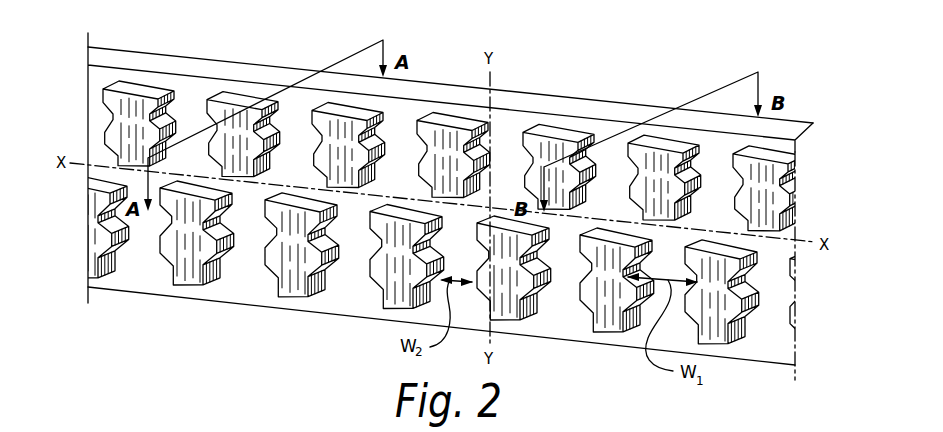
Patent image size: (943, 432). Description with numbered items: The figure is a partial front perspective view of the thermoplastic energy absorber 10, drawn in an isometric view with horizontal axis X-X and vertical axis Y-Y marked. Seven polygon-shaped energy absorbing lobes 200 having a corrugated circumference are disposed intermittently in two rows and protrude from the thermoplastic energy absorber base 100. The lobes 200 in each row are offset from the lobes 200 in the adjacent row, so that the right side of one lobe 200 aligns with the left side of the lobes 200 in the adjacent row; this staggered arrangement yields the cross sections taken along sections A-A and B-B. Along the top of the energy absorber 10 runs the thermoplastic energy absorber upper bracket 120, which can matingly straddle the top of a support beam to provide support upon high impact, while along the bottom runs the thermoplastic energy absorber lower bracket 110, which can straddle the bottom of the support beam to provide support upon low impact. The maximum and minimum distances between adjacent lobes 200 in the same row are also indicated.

The thermoplastic energy absorber 10 is at (459, 193).
The thermoplastic energy absorber base 100 is at (443, 196).
The thermoplastic energy absorber lower bracket 110 is at (139, 288).
The thermoplastic energy absorber upper bracket 120 is at (205, 67).
The energy absorbing lobe 200 is at (547, 153).